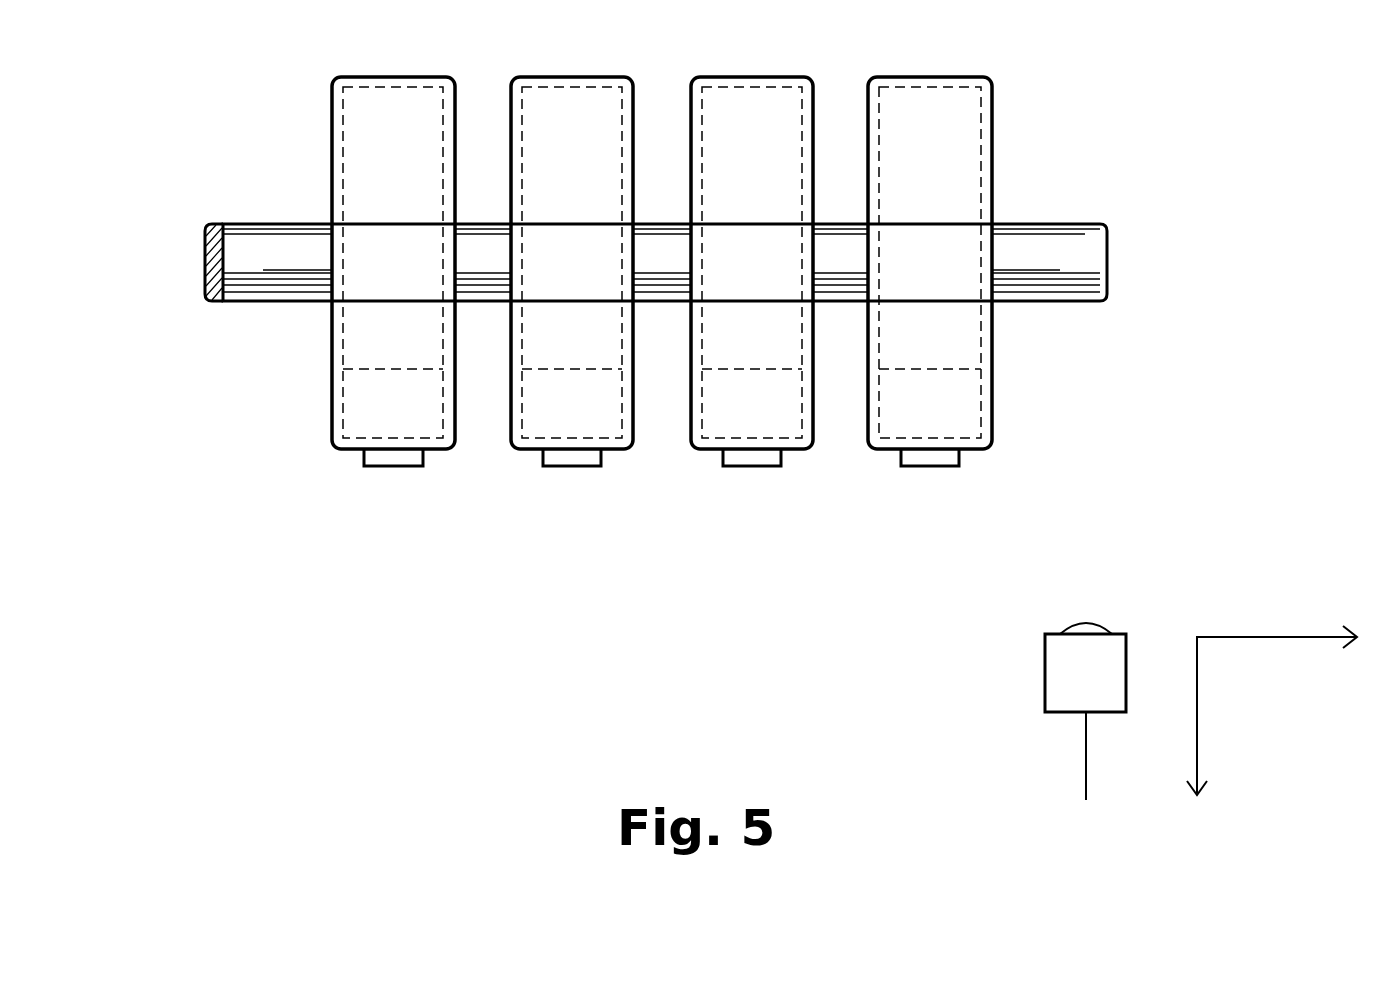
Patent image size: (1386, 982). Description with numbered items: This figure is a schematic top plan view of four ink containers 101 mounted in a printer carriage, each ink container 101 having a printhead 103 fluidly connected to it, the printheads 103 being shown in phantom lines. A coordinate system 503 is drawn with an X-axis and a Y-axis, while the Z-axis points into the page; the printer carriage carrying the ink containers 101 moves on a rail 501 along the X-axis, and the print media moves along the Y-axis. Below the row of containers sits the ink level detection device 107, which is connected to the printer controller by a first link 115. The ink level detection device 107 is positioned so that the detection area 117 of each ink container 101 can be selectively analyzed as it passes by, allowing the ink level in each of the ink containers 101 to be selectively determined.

The ink container 101 is at (662, 263).
The printhead 103 is at (908, 87).
The ink level detection device 107 is at (1085, 667).
The first link 115 is at (1086, 778).
The detection area 117 is at (423, 466).
The rail 501 is at (295, 243).
The coordinate system 503 is at (1240, 637).